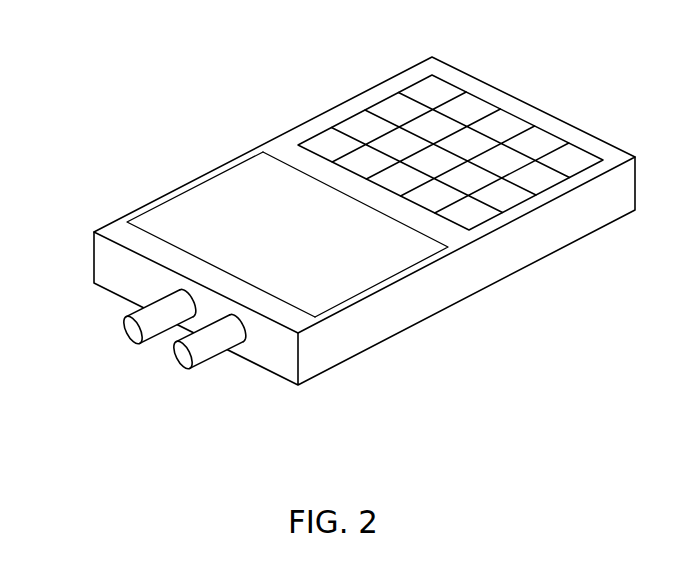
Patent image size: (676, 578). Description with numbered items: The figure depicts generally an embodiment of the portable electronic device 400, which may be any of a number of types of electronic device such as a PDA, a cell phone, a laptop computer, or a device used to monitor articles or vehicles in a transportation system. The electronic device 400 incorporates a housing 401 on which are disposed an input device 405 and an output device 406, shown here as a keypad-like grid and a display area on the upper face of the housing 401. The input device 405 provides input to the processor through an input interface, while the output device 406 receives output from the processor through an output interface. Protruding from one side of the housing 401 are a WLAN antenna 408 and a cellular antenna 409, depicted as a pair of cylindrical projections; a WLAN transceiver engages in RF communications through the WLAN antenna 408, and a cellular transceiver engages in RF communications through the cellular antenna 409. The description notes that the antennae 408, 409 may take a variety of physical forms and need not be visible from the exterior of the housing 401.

The electronic device 400 is at (126, 59).
The housing 401 is at (465, 273).
The input device 405 is at (465, 110).
The output device 406 is at (178, 223).
The WLAN antenna 408 is at (134, 337).
The cellular antenna 409 is at (184, 361).